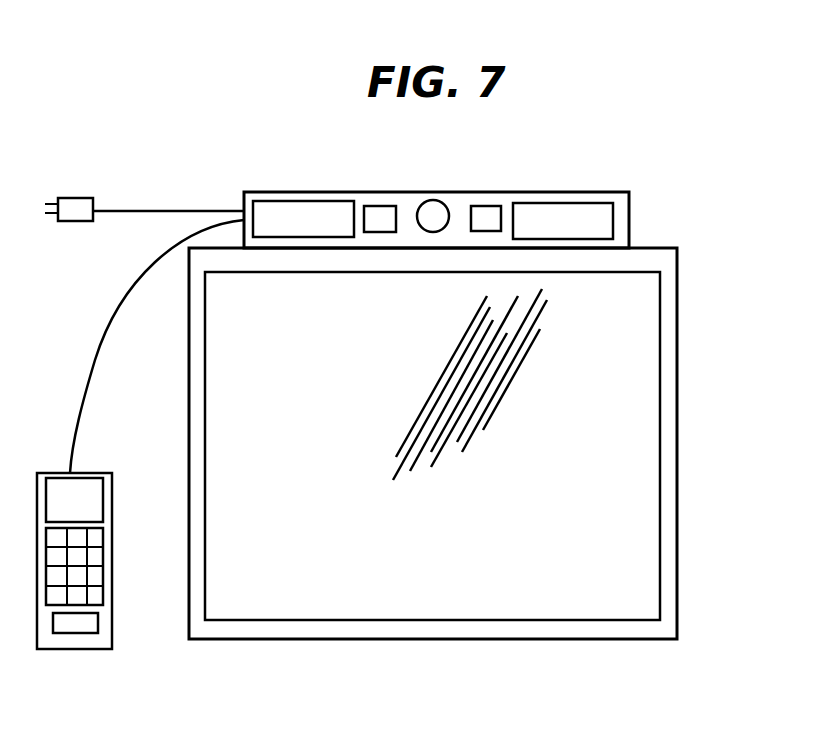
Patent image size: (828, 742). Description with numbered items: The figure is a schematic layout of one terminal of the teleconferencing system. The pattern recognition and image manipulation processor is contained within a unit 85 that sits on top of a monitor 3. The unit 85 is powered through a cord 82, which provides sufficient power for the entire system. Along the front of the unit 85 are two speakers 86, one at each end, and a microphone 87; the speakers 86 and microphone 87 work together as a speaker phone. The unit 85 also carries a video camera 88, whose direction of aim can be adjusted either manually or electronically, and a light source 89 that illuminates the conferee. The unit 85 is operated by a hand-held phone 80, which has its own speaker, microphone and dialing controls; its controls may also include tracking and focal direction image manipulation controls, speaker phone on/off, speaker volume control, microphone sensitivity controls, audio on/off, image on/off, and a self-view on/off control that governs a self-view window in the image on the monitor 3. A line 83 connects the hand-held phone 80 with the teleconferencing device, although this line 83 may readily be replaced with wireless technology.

The monitor 3 is at (678, 392).
The hand-held phone 80 is at (112, 490).
The cord 82 is at (160, 211).
The line 83 is at (87, 387).
The unit 85 is at (631, 215).
The speakers 86 is at (306, 202).
The microphone 87 is at (383, 207).
The video camera 88 is at (447, 200).
The light source 89 is at (493, 205).